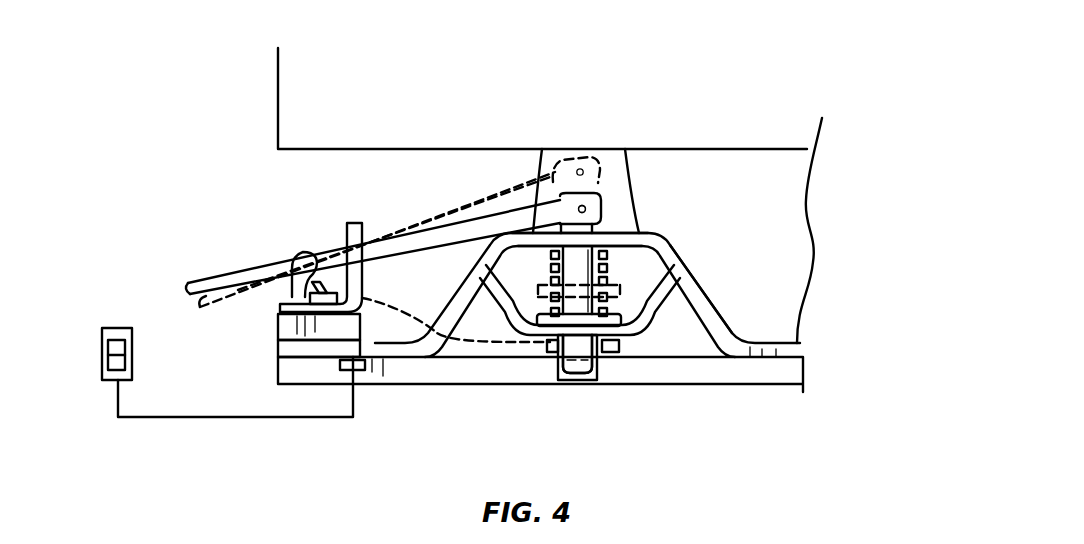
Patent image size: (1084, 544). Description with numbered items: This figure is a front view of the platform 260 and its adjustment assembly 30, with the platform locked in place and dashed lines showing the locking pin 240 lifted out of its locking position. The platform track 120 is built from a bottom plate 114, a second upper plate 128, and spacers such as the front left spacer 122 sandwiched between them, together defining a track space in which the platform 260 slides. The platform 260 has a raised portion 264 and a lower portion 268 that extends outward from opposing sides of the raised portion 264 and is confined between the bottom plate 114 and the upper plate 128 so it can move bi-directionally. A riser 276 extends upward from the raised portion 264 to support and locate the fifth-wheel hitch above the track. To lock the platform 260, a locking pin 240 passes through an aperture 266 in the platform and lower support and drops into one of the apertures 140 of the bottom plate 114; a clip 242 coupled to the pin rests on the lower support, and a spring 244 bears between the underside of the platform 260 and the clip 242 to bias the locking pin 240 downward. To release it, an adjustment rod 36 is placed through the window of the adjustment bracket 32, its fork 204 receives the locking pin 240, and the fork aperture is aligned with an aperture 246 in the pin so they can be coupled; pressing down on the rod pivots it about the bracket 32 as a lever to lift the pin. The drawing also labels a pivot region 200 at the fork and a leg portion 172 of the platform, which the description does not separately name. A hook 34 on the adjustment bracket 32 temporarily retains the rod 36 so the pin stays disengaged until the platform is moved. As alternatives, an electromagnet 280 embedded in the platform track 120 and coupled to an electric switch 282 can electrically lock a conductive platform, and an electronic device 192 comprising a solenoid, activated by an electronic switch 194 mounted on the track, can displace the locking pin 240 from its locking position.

The adjustment assembly 30 is at (250, 134).
The platform track 120 is at (298, 99).
The riser 276 is at (612, 168).
The fork 204 is at (568, 203).
The adjustment rod 36 is at (236, 285).
The pivot 200 is at (601, 210).
The aperture 246 is at (582, 209).
The adjustment bracket 32 is at (352, 223).
The hook 34 is at (300, 255).
The electronic switch 194 is at (292, 298).
The second upper plate 128 is at (290, 333).
The front left spacer 122 is at (292, 348).
The bottom plate 114 is at (292, 372).
The lower portion 268 is at (785, 350).
The electric switch 282 is at (100, 334).
The electromagnet 280 is at (356, 372).
The platform 260 is at (703, 276).
The raised portion 264 is at (622, 239).
The aperture 266 is at (573, 240).
The band leg 172 is at (645, 322).
The spring 244 is at (552, 266).
The clip 242 is at (548, 322).
The aperture 140 is at (566, 384).
The locking pin 240 is at (600, 378).
The electronic device 192 is at (613, 352).